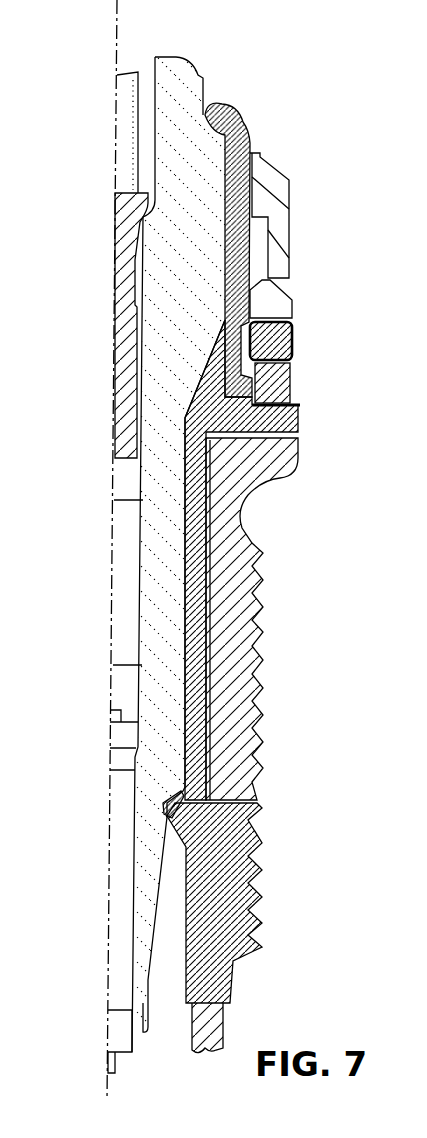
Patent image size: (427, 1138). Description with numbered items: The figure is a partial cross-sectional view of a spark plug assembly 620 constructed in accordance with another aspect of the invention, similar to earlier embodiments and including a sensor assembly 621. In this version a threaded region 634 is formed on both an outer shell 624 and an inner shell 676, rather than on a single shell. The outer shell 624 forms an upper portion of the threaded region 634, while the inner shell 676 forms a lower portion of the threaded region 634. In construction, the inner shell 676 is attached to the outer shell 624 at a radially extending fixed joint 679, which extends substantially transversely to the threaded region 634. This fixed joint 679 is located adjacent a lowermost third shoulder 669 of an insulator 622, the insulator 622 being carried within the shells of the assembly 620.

The spark plug assembly 620 is at (248, 90).
The sensor assembly 621 is at (322, 113).
The insulator 622 is at (122, 792).
The outer shell 624 is at (262, 595).
The threaded region 634 is at (340, 563).
The lowermost third shoulder 669 is at (168, 816).
The inner shell 676 is at (182, 598).
The fixed joint 679 is at (270, 811).